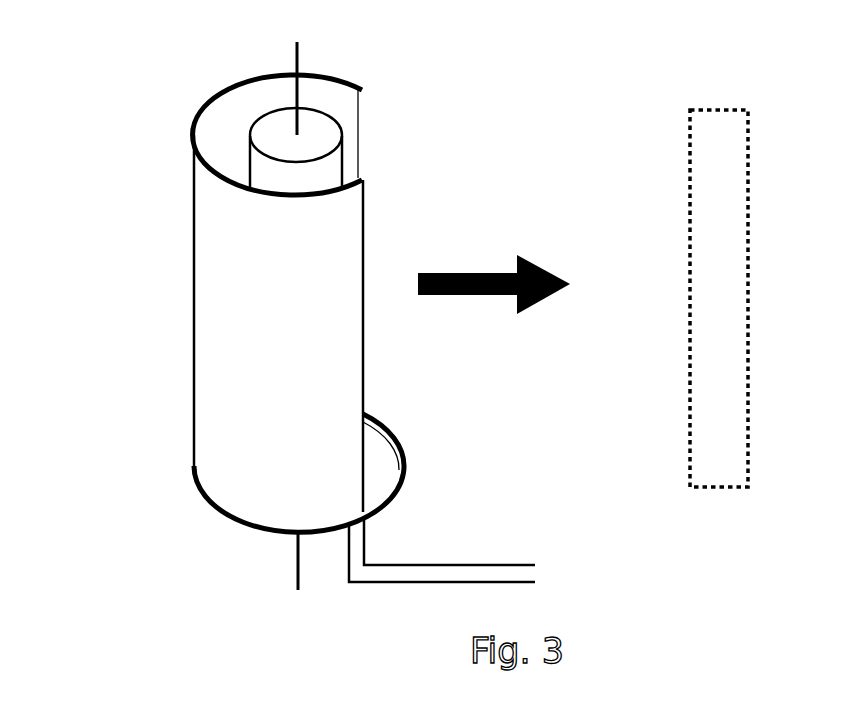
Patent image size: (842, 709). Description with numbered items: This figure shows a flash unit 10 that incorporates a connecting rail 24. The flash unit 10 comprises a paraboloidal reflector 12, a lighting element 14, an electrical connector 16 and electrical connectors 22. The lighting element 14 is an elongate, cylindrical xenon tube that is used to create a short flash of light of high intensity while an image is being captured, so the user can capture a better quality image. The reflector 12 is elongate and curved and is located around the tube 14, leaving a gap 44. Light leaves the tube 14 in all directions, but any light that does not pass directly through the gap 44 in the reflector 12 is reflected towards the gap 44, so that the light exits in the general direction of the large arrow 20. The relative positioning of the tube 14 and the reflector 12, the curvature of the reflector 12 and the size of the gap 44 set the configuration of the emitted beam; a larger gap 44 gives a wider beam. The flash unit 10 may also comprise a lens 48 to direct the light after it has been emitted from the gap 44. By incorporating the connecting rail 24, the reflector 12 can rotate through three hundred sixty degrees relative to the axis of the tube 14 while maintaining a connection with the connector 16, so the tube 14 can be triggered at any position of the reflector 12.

The flash unit 10 is at (152, 236).
The paraboloidal reflector 12 is at (193, 320).
The lighting element 14 is at (343, 135).
The electrical connector 16 is at (348, 565).
The large arrow 20 is at (533, 305).
The electrical connectors 22 is at (293, 60).
The connecting rail 24 is at (404, 487).
The gap 44 is at (350, 158).
The lens 48 is at (720, 110).